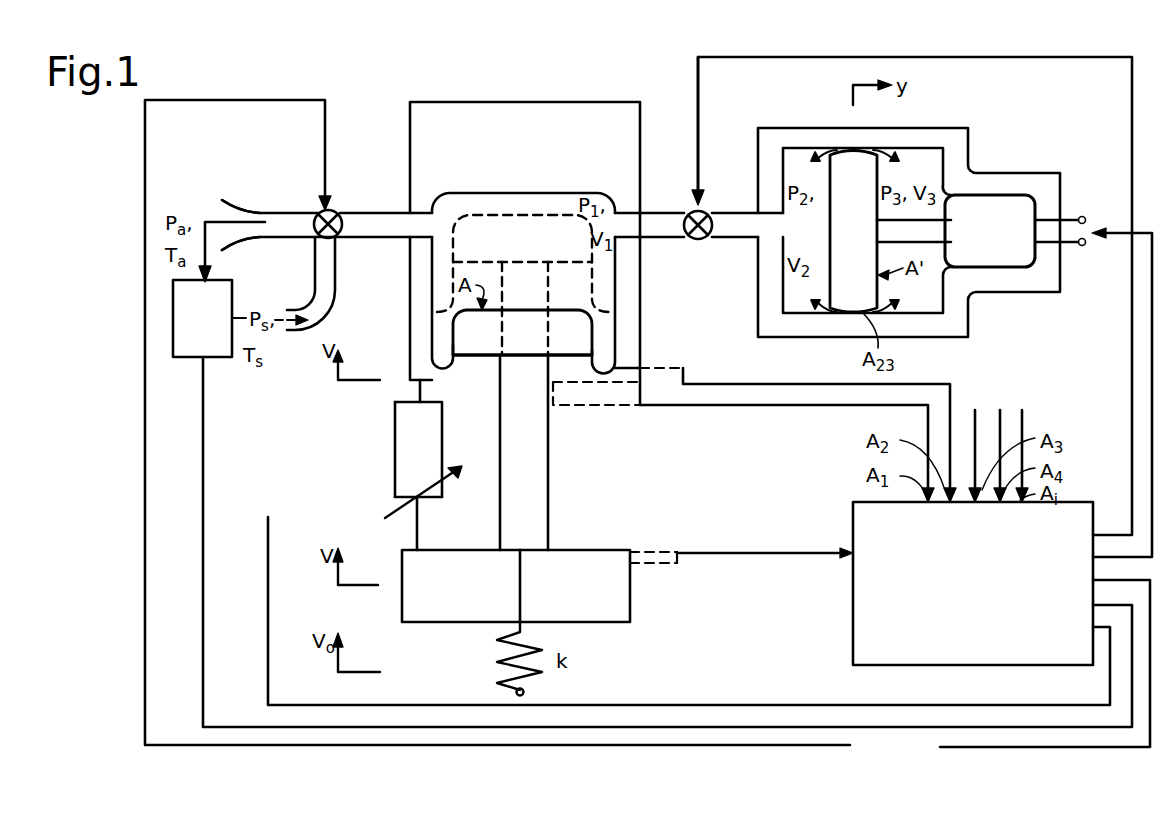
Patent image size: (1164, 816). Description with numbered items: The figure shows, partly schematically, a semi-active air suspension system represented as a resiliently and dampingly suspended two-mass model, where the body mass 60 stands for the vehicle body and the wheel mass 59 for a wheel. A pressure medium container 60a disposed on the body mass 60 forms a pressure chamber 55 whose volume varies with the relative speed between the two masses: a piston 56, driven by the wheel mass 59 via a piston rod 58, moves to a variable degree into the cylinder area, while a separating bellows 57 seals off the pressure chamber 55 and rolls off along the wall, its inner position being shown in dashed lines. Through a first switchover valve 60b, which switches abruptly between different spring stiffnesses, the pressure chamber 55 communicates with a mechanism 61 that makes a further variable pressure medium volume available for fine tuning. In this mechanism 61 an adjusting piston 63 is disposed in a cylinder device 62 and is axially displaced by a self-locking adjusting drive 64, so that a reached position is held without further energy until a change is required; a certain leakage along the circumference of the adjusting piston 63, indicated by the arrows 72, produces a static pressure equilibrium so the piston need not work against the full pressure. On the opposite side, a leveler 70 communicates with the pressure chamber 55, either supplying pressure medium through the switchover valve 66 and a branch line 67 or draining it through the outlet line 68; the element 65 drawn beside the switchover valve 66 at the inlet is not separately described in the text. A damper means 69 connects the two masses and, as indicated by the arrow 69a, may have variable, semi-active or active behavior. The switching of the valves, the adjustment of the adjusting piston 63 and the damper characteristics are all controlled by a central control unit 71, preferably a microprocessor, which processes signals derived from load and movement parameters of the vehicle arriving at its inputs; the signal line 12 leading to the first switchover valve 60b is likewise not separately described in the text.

The control signal line A12 to valve 12 is at (700, 175).
The pressure chamber 55 is at (572, 284).
The piston 56 is at (566, 348).
The separating bellows 57 is at (602, 320).
The piston rod 58 is at (540, 512).
The wheel mass 59 is at (628, 605).
The body mass 60 is at (557, 115).
The pressure medium container 60a is at (457, 190).
The first switchover valve 60b is at (702, 242).
The mechanism 61 is at (970, 318).
The cylinder device 62 is at (932, 135).
The adjusting piston 63 is at (843, 295).
The adjusting drive 64 is at (985, 205).
The inlet valve 65 is at (343, 235).
The switchover valve 66 is at (318, 212).
The branch line 67 is at (330, 287).
The outlet line 68 is at (258, 239).
The damper means 69 is at (405, 455).
The arrow 69a is at (446, 490).
The leveler 70 is at (218, 352).
The central control unit 71 is at (868, 632).
The arrows 72 is at (885, 150).